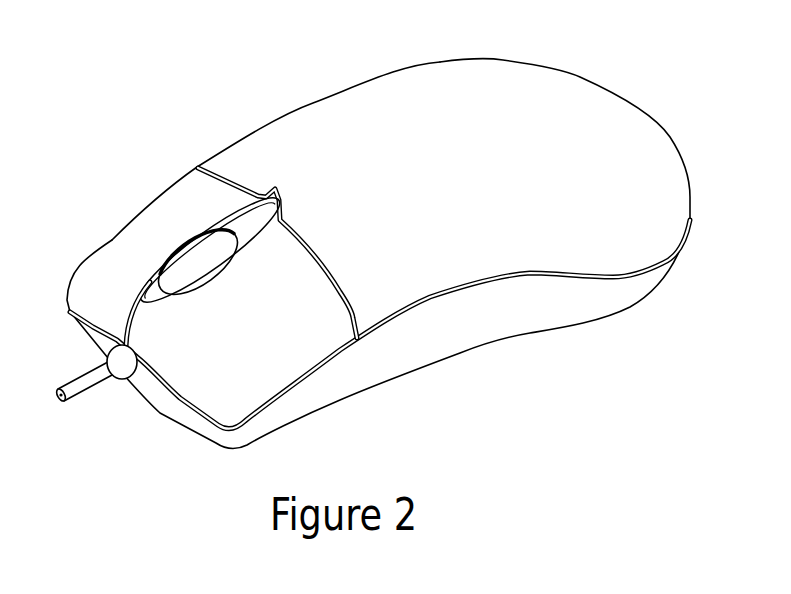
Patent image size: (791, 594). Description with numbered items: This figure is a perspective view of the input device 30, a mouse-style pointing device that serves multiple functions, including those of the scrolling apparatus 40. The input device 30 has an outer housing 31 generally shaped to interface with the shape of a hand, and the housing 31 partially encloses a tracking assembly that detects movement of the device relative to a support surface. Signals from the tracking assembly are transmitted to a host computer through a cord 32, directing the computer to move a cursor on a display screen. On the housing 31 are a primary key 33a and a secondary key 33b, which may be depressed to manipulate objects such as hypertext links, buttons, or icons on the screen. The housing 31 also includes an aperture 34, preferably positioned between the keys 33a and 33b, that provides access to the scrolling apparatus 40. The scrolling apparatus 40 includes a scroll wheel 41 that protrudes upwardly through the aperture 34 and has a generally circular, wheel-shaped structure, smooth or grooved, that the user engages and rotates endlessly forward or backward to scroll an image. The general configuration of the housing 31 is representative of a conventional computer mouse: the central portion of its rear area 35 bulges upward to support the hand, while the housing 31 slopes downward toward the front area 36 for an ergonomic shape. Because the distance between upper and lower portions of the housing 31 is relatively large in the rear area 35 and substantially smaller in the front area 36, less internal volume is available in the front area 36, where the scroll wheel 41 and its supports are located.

The input device 30 is at (310, 96).
The outer housing 31 is at (502, 62).
The cord 32 is at (73, 393).
The primary key 33a is at (237, 420).
The secondary key 33b is at (117, 245).
The aperture 34 is at (175, 297).
The rear area 35 is at (660, 156).
The front area 36 is at (145, 395).
The scrolling apparatus 40 is at (190, 231).
The scroll wheel 41 is at (213, 258).